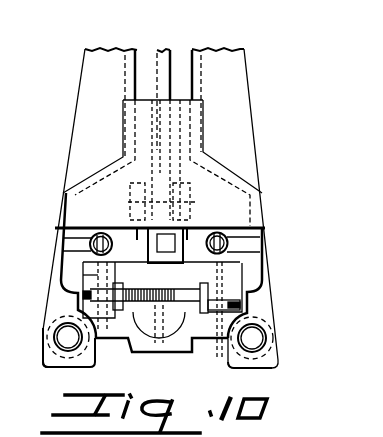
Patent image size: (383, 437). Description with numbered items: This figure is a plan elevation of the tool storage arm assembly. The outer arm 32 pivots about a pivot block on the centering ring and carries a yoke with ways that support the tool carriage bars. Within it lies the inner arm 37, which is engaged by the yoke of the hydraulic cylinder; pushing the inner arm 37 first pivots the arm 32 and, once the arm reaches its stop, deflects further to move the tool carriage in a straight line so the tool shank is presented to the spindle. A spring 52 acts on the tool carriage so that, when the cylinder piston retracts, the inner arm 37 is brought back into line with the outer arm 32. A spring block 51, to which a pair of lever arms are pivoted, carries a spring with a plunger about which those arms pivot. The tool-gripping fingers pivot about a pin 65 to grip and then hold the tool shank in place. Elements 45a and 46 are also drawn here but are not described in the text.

The arm 32 is at (92, 77).
The inner arm 37 is at (173, 63).
The spring 52 is at (108, 227).
The pin 65 is at (78, 271).
The bores 45a is at (66, 337).
The mounting blocks 46 is at (46, 354).
The spring block 51 is at (175, 327).